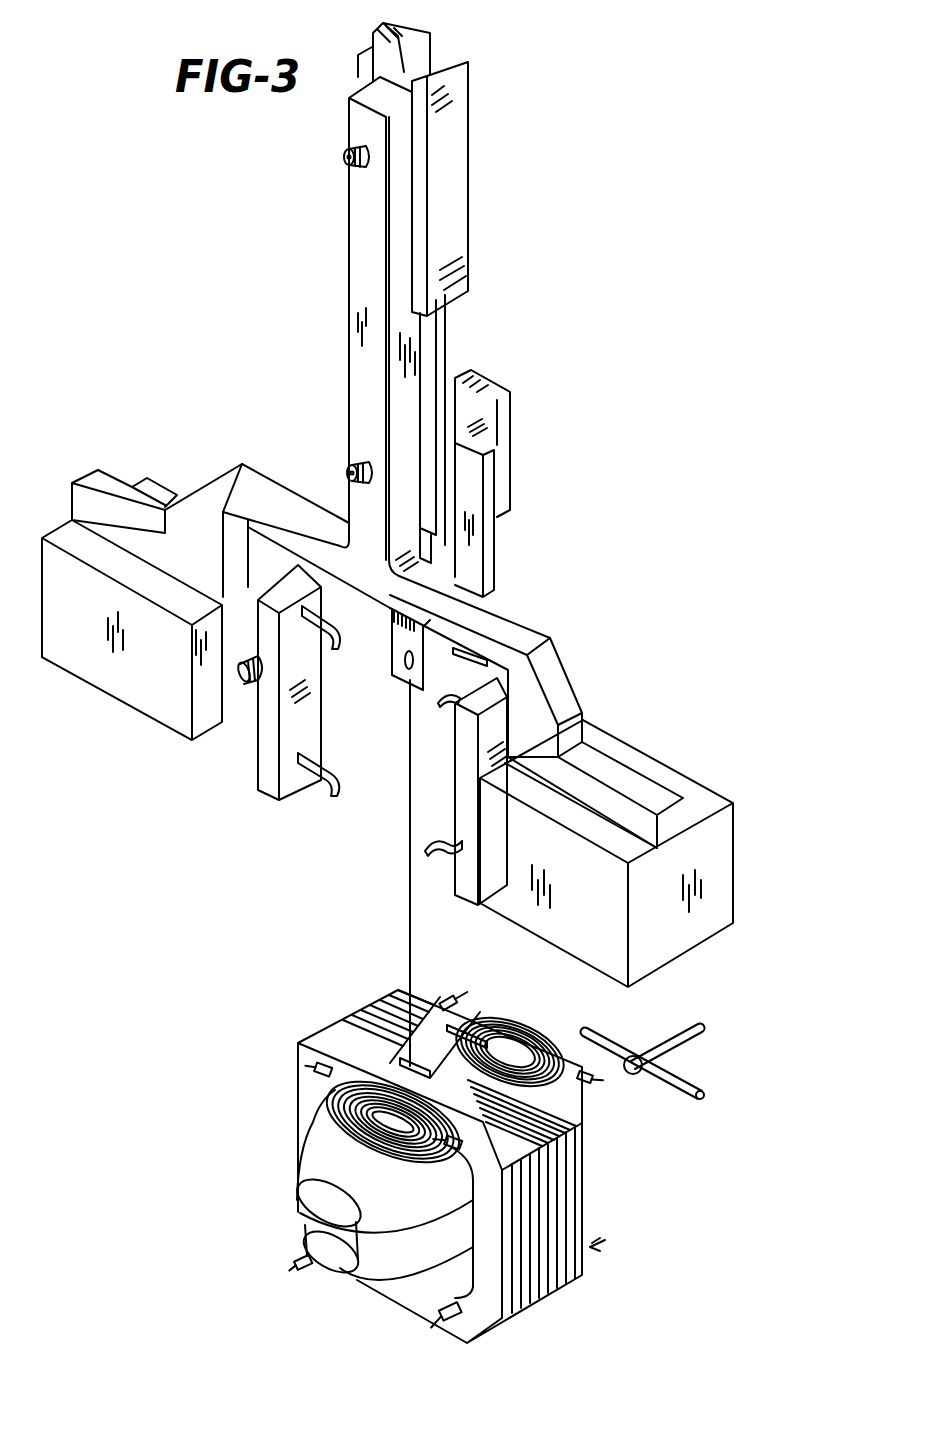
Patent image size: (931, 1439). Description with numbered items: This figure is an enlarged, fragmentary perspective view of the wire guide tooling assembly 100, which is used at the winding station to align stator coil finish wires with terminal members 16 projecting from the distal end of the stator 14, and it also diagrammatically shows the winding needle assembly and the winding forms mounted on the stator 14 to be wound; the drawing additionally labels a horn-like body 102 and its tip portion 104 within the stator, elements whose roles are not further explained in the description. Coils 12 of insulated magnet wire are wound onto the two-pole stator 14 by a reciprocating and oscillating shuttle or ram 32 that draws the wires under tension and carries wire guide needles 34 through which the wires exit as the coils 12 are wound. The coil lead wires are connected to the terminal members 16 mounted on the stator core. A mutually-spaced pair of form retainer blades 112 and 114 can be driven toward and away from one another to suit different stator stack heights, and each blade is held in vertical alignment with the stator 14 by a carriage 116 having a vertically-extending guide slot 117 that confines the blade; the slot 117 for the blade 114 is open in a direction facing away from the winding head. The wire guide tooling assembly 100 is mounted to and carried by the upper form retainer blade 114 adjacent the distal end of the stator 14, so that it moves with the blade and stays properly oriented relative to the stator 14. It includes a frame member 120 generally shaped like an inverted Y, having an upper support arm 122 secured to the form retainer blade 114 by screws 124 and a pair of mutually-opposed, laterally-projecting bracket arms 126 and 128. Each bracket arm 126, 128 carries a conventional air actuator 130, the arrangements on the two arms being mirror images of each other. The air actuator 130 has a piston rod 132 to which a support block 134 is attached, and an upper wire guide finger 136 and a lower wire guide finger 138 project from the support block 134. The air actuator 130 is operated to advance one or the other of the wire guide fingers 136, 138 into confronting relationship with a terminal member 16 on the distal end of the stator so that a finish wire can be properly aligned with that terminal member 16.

The wire guide tooling assembly 100 is at (548, 246).
The ultrasonic horn 102 is at (422, 1214).
The horn tip 104 is at (380, 1262).
The form retainer blade 112 is at (512, 432).
The form retainer blade 114 is at (437, 343).
The carriage 116 is at (463, 124).
The guide slot 117 is at (405, 78).
The coils 12 is at (520, 1030).
The frame member 120 is at (306, 360).
The upper support arm 122 is at (357, 223).
The screws 124 is at (342, 157).
The bracket arm 126 is at (607, 762).
The bracket arm 128 is at (193, 500).
The air actuator 130 is at (120, 680).
The piston rod 132 is at (240, 690).
The support block 134 is at (267, 762).
The upper wire guide finger 136 is at (440, 703).
The lower wire guide finger 138 is at (427, 848).
The stator 14 is at (560, 1180).
The terminal members 16 is at (460, 992).
The shuttle or ram 32 is at (683, 1017).
The wire guide needles 34 is at (603, 1030).